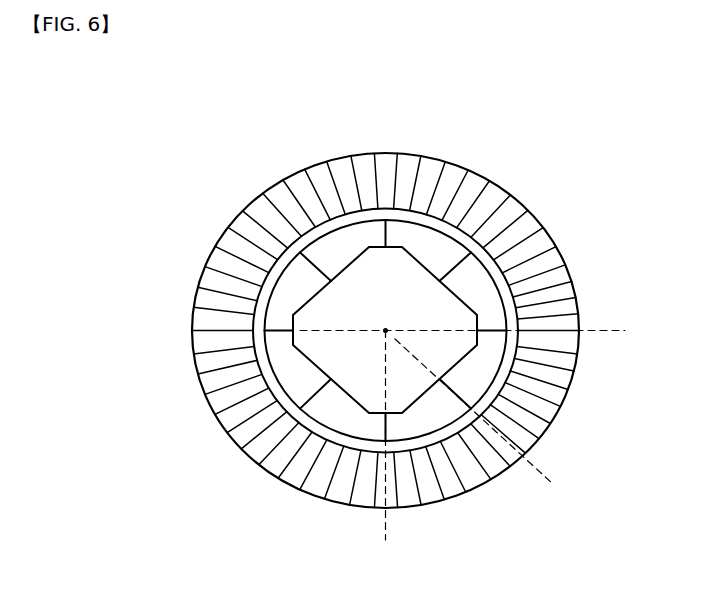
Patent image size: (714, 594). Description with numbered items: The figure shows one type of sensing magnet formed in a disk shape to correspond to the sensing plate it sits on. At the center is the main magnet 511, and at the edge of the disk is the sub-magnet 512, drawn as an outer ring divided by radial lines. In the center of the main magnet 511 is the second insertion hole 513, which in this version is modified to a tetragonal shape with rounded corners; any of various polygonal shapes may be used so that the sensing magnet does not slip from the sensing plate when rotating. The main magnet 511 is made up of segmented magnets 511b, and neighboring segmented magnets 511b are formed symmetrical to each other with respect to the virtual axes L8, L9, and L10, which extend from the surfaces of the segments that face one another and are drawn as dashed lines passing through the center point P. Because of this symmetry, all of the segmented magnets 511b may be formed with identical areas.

The main magnet 511 is at (218, 104).
The segmented magnets 511b is at (335, 247).
The sub-magnet 512 is at (462, 180).
The second insertion hole 513 is at (393, 266).
The center point P is at (385, 330).
The virtual axis L8 is at (386, 450).
The virtual axis L9 is at (484, 423).
The virtual axis L10 is at (477, 331).